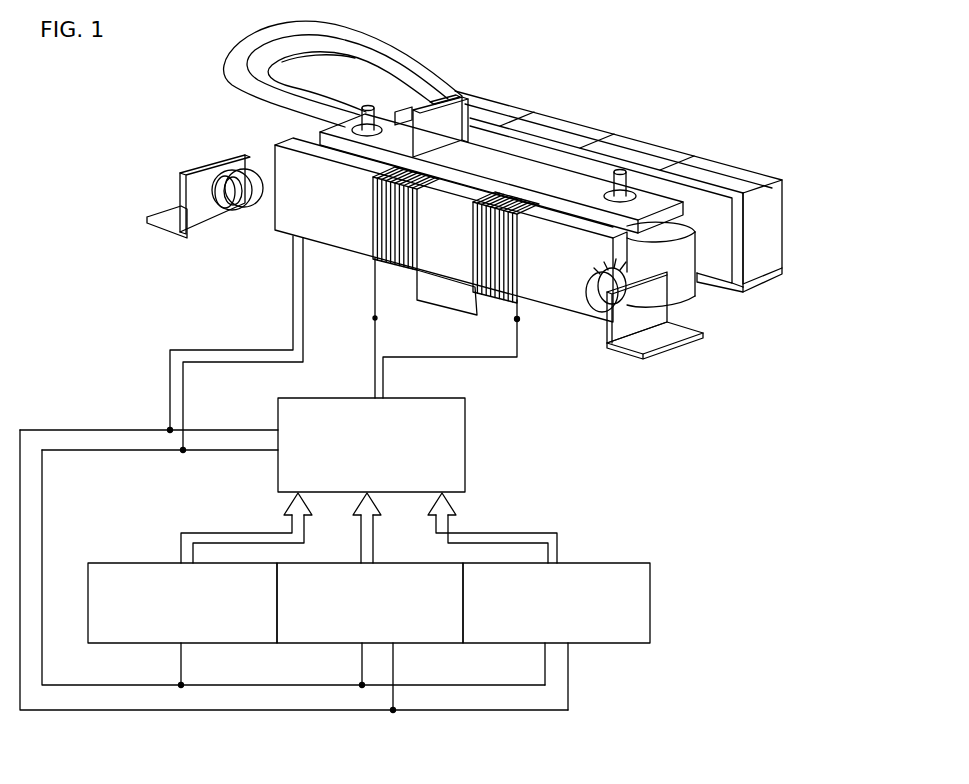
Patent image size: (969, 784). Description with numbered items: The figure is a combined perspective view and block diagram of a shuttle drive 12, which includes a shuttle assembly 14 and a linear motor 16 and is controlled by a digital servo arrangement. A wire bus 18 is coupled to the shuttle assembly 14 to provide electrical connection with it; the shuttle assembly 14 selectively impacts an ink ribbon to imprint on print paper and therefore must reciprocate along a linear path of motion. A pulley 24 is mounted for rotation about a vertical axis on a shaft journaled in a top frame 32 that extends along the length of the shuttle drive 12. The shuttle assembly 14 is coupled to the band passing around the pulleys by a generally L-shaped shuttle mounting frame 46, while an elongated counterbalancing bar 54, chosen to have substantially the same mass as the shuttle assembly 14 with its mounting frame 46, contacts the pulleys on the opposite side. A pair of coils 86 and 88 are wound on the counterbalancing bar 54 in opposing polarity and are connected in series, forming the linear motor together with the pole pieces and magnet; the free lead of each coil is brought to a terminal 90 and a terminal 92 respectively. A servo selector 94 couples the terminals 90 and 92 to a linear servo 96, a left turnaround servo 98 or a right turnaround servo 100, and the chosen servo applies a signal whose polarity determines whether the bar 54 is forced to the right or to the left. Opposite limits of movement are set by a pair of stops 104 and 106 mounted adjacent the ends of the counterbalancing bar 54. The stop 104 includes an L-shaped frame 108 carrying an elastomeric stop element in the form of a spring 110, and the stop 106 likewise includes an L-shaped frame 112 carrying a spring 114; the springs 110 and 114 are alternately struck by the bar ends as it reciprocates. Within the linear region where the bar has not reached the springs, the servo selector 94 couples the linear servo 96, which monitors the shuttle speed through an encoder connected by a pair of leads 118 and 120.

The shuttle drive 12 is at (553, 77).
The shuttle assembly 14 is at (713, 172).
The linear motor 16 is at (403, 283).
The wire bus 18 is at (330, 67).
The pulley 24 is at (690, 290).
The top frame 32 is at (578, 185).
The shuttle mounting frame 46 is at (783, 271).
The counterbalancing bar 54 is at (530, 292).
The coil 86 is at (497, 297).
The coil 88 is at (377, 243).
The terminal 90 is at (518, 330).
The terminal 92 is at (372, 318).
The servo selector 94 is at (467, 445).
The linear servo 96 is at (392, 562).
The left turnaround servo 98 is at (117, 562).
The right turnaround servo 100 is at (602, 562).
The stop 104 is at (637, 325).
The stop 106 is at (201, 216).
The L-shaped frame 108 is at (683, 347).
The spring 110 is at (570, 288).
The L-shaped frame 112 is at (227, 213).
The spring 114 is at (257, 168).
The lead 118 is at (215, 348).
The lead 120 is at (205, 362).